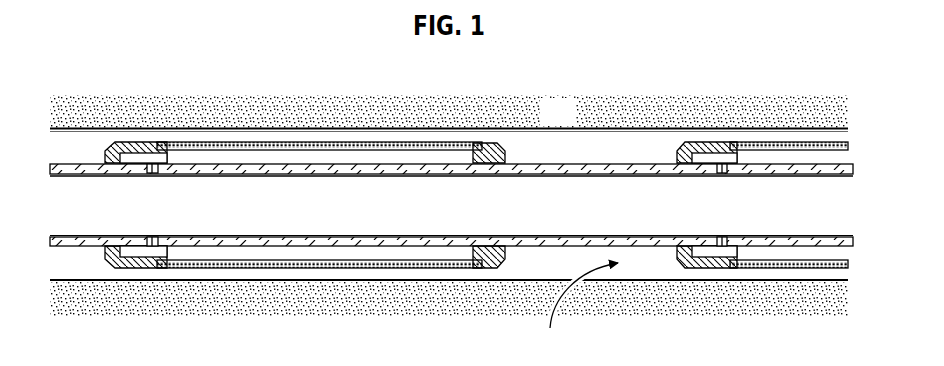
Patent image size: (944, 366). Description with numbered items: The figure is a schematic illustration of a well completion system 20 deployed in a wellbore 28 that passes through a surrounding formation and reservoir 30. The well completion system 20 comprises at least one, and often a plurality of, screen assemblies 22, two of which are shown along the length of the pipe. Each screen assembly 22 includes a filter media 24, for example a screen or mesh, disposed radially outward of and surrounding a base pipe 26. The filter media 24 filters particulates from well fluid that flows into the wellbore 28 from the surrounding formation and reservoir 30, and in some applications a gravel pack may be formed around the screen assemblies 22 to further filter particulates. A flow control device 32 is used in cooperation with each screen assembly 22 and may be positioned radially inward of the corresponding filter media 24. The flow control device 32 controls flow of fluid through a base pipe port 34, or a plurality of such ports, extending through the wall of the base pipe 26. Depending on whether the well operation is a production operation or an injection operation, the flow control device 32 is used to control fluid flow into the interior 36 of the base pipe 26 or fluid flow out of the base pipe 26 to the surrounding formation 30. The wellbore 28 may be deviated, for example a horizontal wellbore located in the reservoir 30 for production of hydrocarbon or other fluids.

The well completion system 20 is at (207, 121).
The screen assembly 22 is at (284, 135).
The filter media 24 is at (374, 142).
The base pipe 26 is at (640, 163).
The wellbore 28 is at (577, 309).
The formation and reservoir 30 is at (545, 123).
The flow control device 32 is at (143, 155).
The base pipe port 34 is at (153, 174).
The interior of the base pipe 36 is at (545, 215).